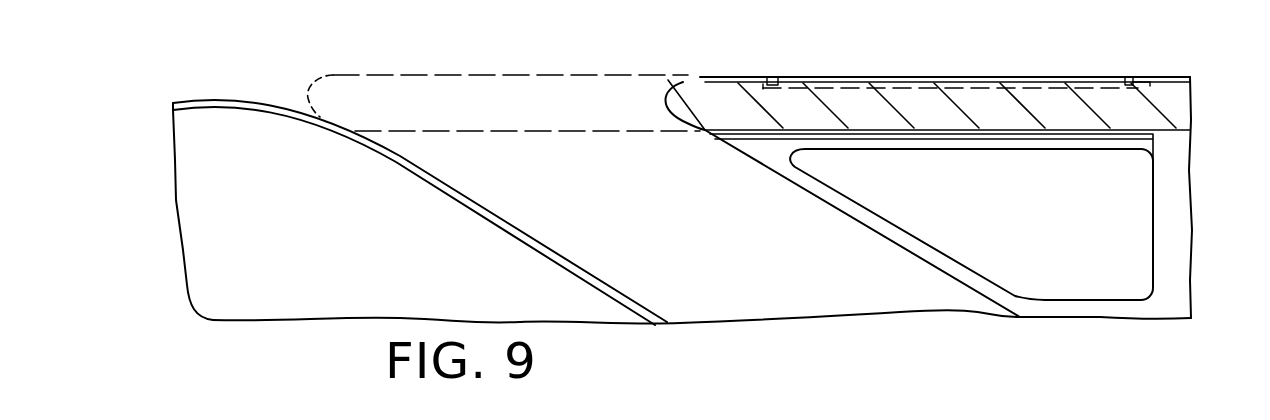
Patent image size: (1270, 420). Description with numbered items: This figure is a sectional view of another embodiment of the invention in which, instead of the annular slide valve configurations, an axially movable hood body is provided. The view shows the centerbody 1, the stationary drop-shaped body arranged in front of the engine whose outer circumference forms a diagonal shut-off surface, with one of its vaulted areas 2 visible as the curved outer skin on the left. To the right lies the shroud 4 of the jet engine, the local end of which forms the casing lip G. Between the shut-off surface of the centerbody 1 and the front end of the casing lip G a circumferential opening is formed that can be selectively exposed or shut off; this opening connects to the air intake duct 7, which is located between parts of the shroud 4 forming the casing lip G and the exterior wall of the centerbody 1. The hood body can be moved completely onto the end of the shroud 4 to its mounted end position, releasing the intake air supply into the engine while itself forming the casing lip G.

The centerbody 1 is at (487, 208).
The vaulted area 2 is at (308, 118).
The shroud 4 is at (1037, 113).
The air intake duct 7 is at (715, 208).
The casing lip G is at (319, 81).